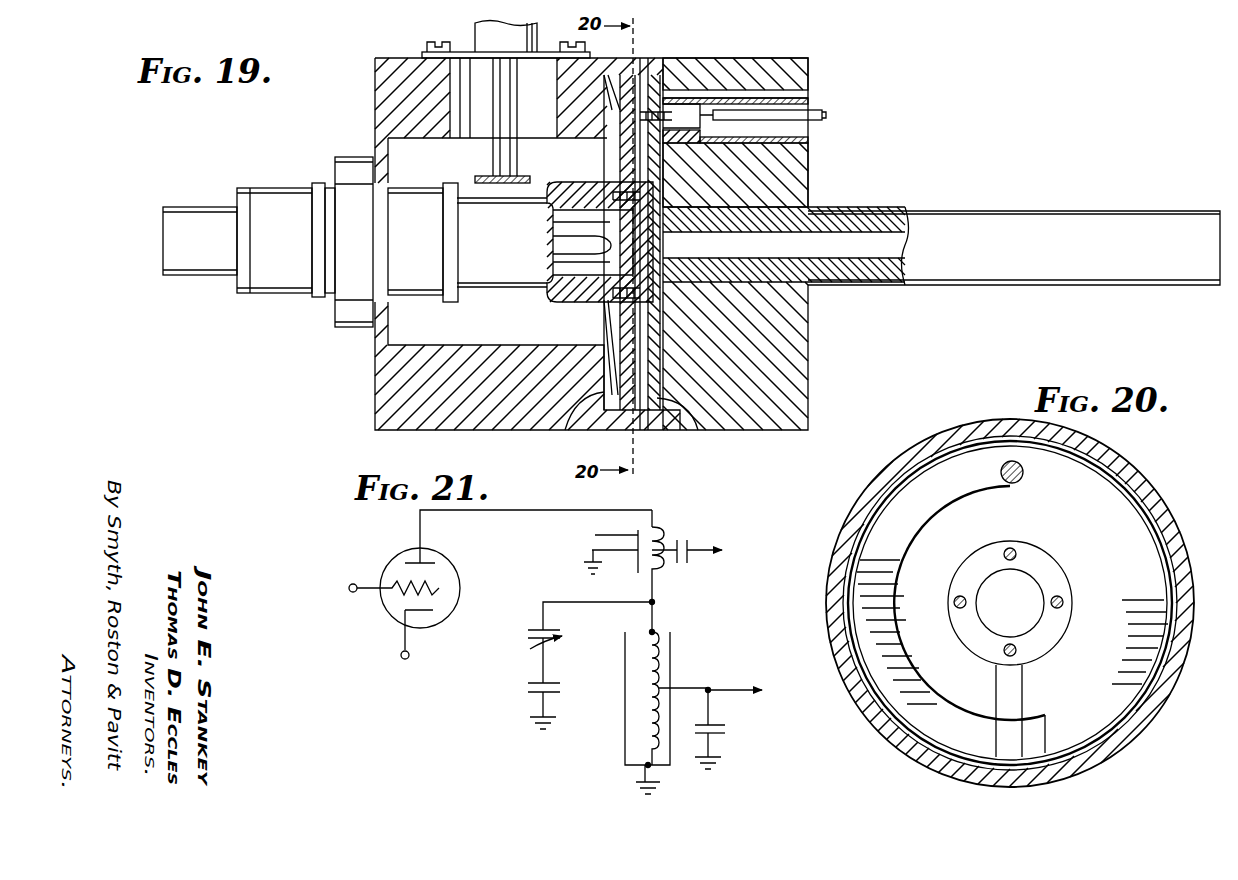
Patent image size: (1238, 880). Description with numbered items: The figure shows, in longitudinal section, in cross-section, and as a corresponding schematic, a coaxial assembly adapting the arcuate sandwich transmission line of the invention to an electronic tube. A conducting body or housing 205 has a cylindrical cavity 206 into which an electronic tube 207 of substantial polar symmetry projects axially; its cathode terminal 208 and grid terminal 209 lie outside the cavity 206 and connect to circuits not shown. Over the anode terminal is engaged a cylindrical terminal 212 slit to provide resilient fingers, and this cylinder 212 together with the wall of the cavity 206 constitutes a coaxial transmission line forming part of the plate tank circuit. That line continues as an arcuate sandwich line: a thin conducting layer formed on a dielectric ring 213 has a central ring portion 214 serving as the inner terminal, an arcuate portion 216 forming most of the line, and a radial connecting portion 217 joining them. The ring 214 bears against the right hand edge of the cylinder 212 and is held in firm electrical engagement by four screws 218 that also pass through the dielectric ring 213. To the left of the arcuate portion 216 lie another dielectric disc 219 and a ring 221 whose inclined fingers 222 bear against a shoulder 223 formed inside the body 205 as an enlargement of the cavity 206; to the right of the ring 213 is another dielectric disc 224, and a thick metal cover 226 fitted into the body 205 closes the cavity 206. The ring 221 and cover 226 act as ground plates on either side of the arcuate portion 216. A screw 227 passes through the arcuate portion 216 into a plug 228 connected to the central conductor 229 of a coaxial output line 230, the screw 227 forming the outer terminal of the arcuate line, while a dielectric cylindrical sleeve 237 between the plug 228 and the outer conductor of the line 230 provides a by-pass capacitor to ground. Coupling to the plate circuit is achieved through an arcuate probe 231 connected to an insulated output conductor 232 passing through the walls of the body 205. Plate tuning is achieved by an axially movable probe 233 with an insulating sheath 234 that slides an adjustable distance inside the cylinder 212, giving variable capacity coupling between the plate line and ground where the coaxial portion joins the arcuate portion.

In FIG. 19, the conducting body or housing 205 is at (375, 392).
In FIG. 20, the conducting body or housing 205 is at (1150, 485).
In FIG. 21, the conducting body or housing 205 is at (625, 751).
In FIG. 19, the cylindrical cavity 206 is at (425, 296).
In FIG. 21, the cylindrical cavity 206 is at (600, 549).
In FIG. 19, the electronic tube 207 is at (404, 186).
In FIG. 19, the cathode terminal 208 is at (237, 287).
In FIG. 21, the cathode terminal 208 is at (400, 643).
In FIG. 19, the grid terminal 209 is at (345, 328).
In FIG. 21, the grid terminal 209 is at (388, 583).
In FIG. 19, the cylindrical terminal 212 is at (565, 302).
In FIG. 21, the cylindrical terminal 212 is at (533, 628).
In FIG. 19, the dielectric ring 213 is at (642, 95).
In FIG. 20, the dielectric ring 213 is at (1105, 565).
In FIG. 20, the central ring portion 214 is at (1012, 550).
In FIG. 21, the central ring portion 214 is at (654, 632).
In FIG. 19, the arcuate portion 216 is at (637, 416).
In FIG. 20, the arcuate portion 216 is at (910, 495).
In FIG. 21, the arcuate portion 216 is at (660, 656).
In FIG. 20, the radial connecting portion 217 is at (1000, 684).
In FIG. 20, the screws 218 is at (955, 602).
In FIG. 19, the dielectric ring or disc 219 is at (622, 410).
In FIG. 21, the dielectric ring or disc 219 is at (660, 540).
In FIG. 19, the ring 221 is at (615, 340).
In FIG. 19, the inclined fingers 222 is at (604, 405).
In FIG. 19, the shoulder 223 is at (612, 108).
In FIG. 19, the dielectric disc 224 is at (657, 398).
In FIG. 19, the metal cover 226 is at (808, 70).
In FIG. 21, the metal cover 226 is at (722, 757).
In FIG. 19, the screw 227 is at (665, 112).
In FIG. 20, the screw 227 is at (1009, 461).
In FIG. 21, the screw 227 is at (660, 690).
In FIG. 19, the plug 228 is at (690, 115).
In FIG. 21, the plug 228 is at (722, 725).
In FIG. 19, the central conductor 229 is at (825, 115).
In FIG. 21, the central conductor 229 is at (735, 690).
In FIG. 19, the coaxial output line 230 is at (808, 143).
In FIG. 19, the arcuate probe 231 is at (530, 178).
In FIG. 21, the arcuate probe 231 is at (690, 565).
In FIG. 19, the insulated output conductor 232 is at (505, 108).
In FIG. 19, the axially movable probe 233 is at (1036, 214).
In FIG. 21, the axially movable probe 233 is at (530, 645).
In FIG. 19, the insulating sheath 234 is at (860, 282).
In FIG. 21, the insulating sheath 234 is at (528, 688).
In FIG. 19, the dielectric cylindrical sleeve 237 is at (703, 135).
In FIG. 21, the dielectric cylindrical sleeve 237 is at (727, 733).